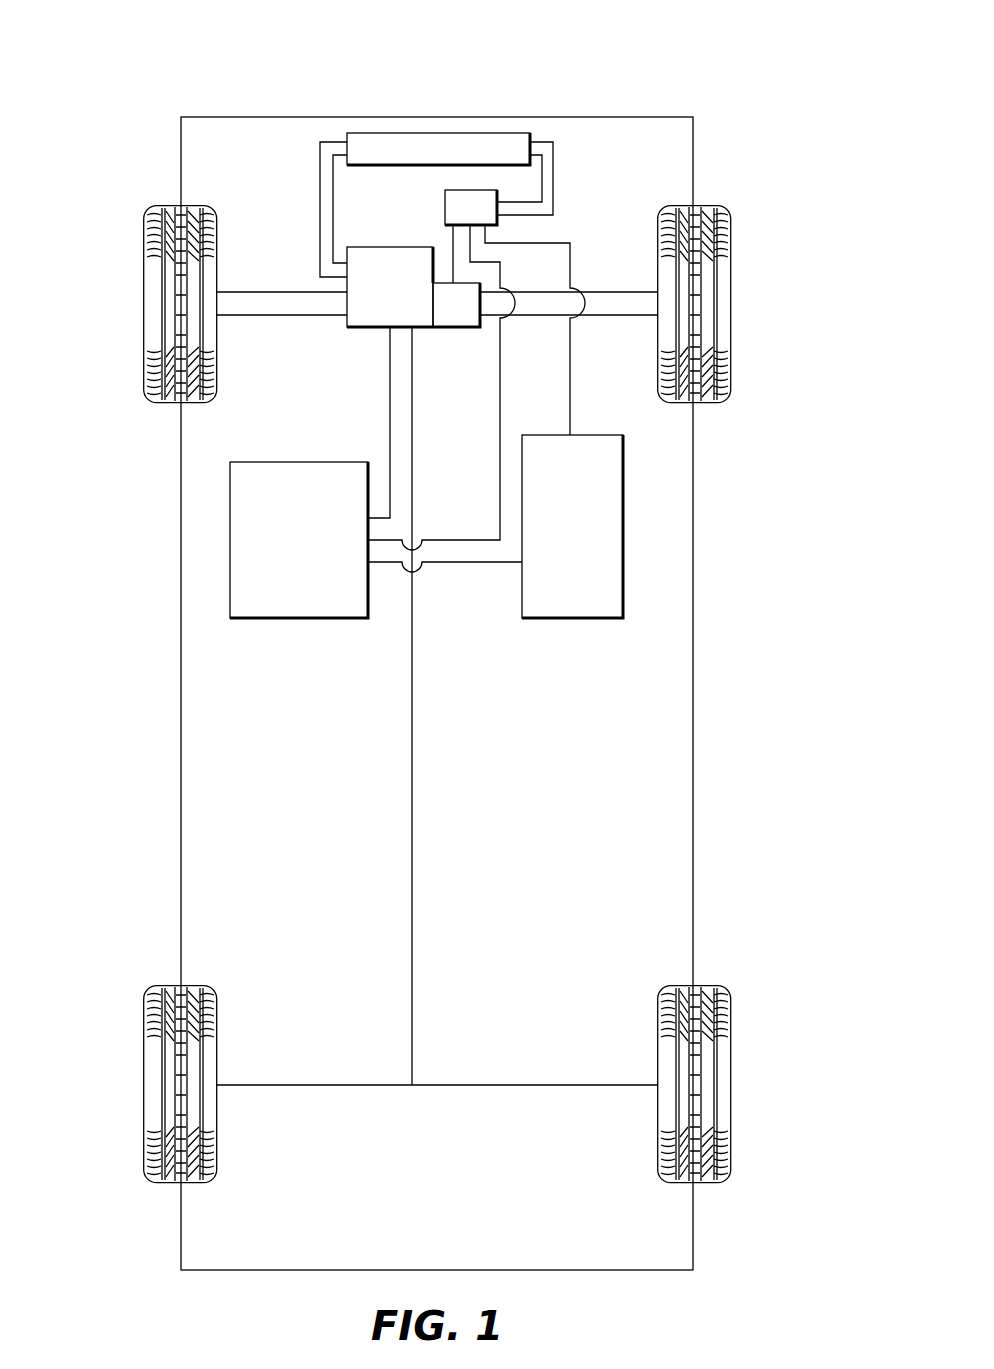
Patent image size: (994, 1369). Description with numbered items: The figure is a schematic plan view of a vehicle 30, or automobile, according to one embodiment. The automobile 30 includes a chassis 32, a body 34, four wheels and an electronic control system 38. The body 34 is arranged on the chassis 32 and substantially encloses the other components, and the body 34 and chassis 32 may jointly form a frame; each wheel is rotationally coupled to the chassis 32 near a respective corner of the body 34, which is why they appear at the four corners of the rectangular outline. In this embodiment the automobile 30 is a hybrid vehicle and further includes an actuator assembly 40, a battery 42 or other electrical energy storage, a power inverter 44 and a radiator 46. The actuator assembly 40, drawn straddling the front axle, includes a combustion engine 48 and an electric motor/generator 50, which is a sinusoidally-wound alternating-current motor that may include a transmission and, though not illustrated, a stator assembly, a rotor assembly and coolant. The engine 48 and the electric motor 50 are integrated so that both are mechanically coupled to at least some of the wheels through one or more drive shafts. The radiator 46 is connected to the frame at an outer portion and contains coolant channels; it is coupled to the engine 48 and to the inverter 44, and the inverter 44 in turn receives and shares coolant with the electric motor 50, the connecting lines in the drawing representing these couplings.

The vehicle 30 is at (714, 40).
The chassis 32 is at (410, 716).
The body 34 is at (180, 510).
The electronic control system 38 is at (310, 472).
The actuator assembly 40 is at (413, 339).
The battery 42 is at (495, 526).
The power inverter 44 is at (476, 370).
The radiator 46 is at (383, 133).
The combustion engine 48 is at (390, 287).
The electric motor/generator 50 is at (431, 341).